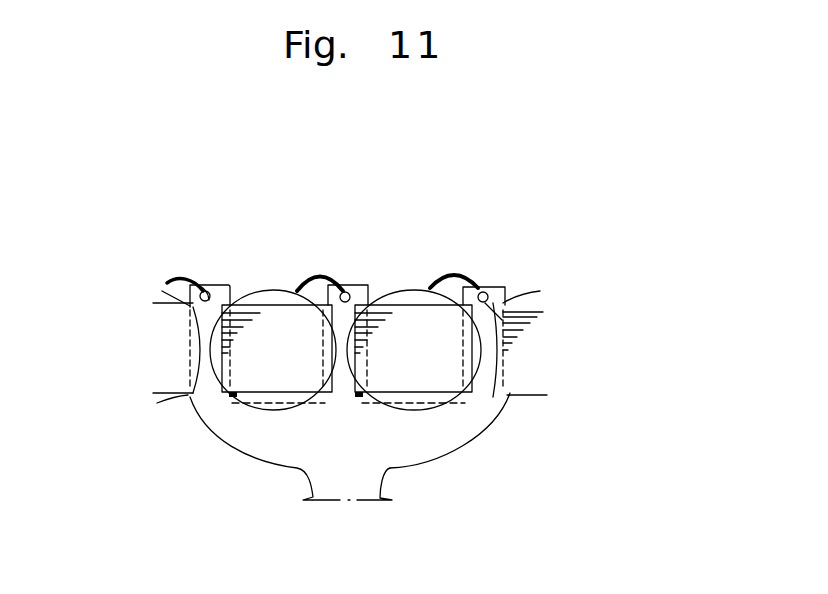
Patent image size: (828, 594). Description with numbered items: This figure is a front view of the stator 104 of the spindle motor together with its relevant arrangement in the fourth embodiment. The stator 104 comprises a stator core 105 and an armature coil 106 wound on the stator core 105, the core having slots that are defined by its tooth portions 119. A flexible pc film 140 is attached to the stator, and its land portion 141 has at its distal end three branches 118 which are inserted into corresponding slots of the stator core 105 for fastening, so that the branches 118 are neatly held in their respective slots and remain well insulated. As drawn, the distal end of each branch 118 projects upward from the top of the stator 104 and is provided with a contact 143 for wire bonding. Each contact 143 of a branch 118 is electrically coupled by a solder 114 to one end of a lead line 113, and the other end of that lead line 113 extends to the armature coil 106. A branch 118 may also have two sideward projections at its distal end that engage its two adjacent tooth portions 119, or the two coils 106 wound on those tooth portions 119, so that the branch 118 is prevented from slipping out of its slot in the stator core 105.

The stator 104 is at (542, 360).
The stator core 105 is at (410, 392).
The armature coil 106 is at (267, 287).
The lead line 113 is at (180, 277).
The solder 114 is at (197, 310).
The branch 118 is at (218, 287).
The tooth portion 119 is at (250, 378).
The flexible pc film 140 is at (255, 470).
The land portion 141 is at (485, 446).
The contact 143 is at (346, 288).